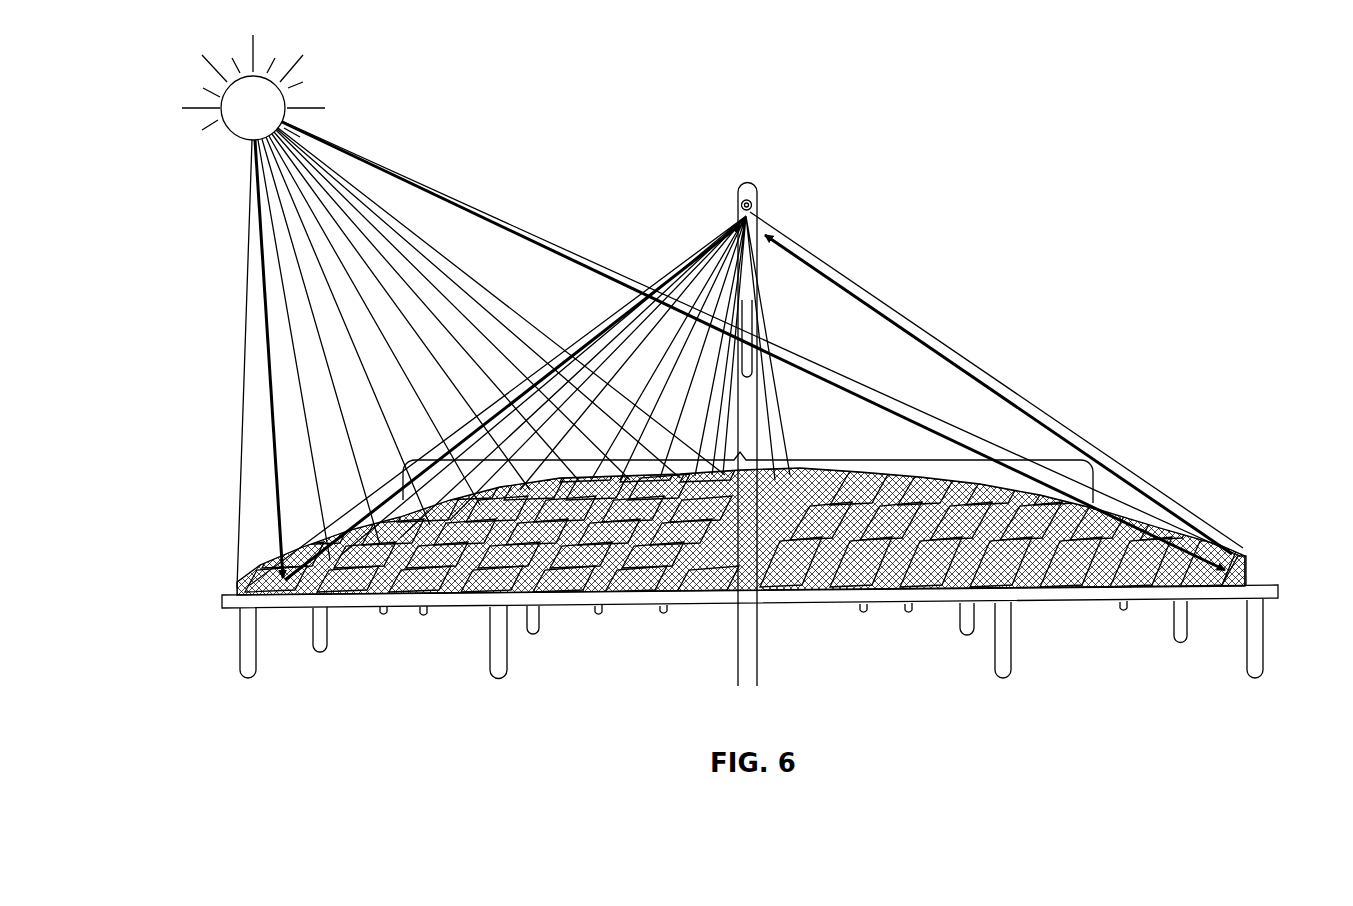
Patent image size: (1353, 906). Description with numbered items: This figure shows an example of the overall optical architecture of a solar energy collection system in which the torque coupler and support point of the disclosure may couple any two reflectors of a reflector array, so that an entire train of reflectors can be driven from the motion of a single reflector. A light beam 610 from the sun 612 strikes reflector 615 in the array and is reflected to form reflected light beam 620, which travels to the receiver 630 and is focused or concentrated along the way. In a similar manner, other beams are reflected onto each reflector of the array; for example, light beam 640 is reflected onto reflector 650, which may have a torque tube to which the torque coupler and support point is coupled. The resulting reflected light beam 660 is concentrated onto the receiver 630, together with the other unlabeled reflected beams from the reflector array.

The light beam 610 is at (262, 397).
The sun 612 is at (238, 145).
The reflector 615 is at (255, 586).
The reflected light beam 620 is at (519, 392).
The receiver 630 is at (736, 190).
The light beam 640 is at (877, 413).
The reflector 650 is at (1245, 550).
The reflected light beam 660 is at (1046, 418).